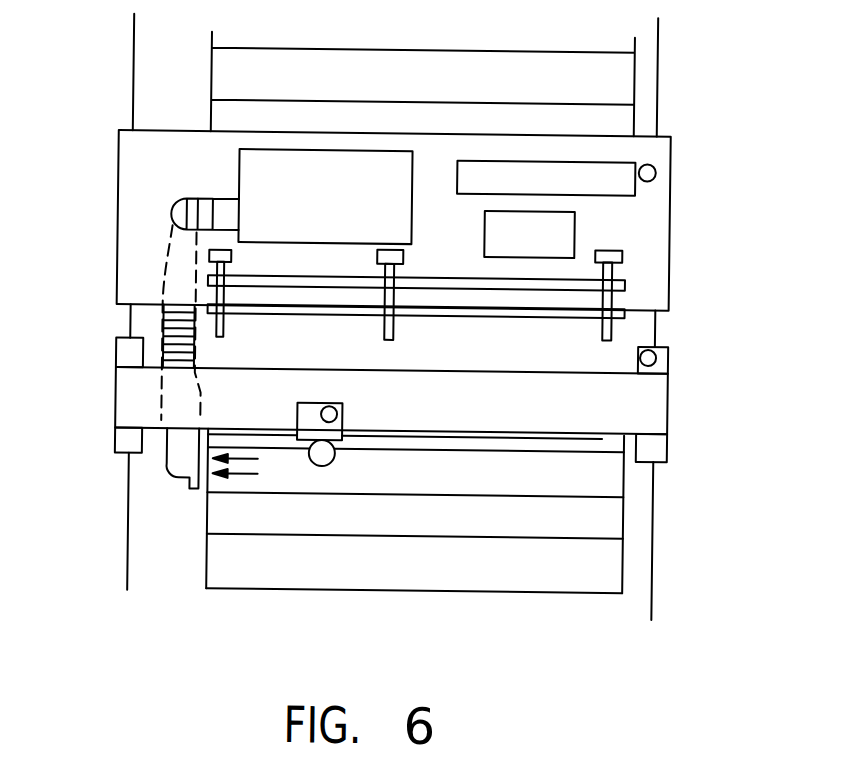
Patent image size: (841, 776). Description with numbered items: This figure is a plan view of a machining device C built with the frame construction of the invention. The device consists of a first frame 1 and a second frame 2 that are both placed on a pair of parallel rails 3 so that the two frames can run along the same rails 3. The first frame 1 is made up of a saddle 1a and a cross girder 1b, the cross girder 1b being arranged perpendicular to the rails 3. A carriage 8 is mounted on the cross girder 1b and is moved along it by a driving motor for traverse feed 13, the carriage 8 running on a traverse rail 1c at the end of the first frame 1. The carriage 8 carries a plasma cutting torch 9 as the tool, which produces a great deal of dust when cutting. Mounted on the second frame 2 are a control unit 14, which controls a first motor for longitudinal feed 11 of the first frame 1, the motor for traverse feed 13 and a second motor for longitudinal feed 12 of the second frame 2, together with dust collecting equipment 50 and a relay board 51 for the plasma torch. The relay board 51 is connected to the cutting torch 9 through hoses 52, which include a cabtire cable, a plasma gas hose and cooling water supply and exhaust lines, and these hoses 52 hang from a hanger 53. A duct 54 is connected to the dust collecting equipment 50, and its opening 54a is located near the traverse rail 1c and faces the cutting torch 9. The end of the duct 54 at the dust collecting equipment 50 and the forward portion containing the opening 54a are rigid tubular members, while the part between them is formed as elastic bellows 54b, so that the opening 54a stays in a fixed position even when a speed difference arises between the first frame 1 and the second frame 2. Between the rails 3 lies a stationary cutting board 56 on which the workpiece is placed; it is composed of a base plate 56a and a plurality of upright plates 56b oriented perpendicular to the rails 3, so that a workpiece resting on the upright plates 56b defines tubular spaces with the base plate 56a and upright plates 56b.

The machining device C is at (111, 153).
The first frame 1 is at (380, 429).
The saddle 1a is at (131, 441).
The cross girder 1b is at (658, 407).
The traverse rail 1c is at (603, 430).
The second frame 2 is at (116, 192).
The rails 3 is at (130, 566).
The carriage 8 is at (298, 417).
The cutting torch 9 is at (332, 463).
The first motor for longitudinal feed 11 is at (656, 357).
The second motor for longitudinal feed 12 is at (654, 169).
The driving motor for traverse feed 13 is at (338, 415).
The control unit 14 is at (525, 176).
The dust collecting equipment 50 is at (326, 166).
The relay board 51 is at (573, 230).
The hoses 52 is at (485, 225).
The hanger 53 is at (490, 316).
The duct 54 is at (174, 361).
The opening 54a is at (204, 464).
The elastic bellows 54b is at (194, 338).
The stationary cutting board 56 is at (414, 556).
The base plate 56a is at (398, 573).
The upright plates 56b is at (549, 538).